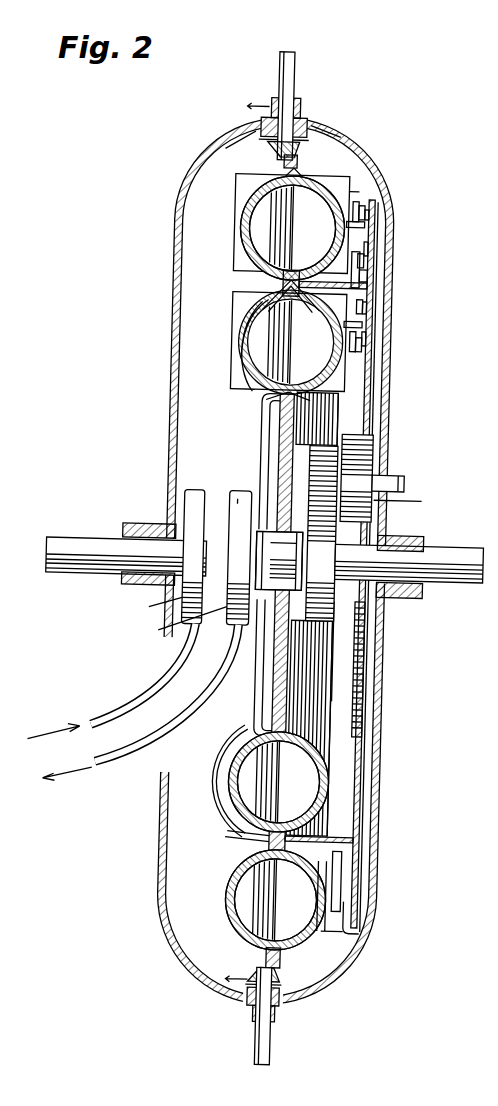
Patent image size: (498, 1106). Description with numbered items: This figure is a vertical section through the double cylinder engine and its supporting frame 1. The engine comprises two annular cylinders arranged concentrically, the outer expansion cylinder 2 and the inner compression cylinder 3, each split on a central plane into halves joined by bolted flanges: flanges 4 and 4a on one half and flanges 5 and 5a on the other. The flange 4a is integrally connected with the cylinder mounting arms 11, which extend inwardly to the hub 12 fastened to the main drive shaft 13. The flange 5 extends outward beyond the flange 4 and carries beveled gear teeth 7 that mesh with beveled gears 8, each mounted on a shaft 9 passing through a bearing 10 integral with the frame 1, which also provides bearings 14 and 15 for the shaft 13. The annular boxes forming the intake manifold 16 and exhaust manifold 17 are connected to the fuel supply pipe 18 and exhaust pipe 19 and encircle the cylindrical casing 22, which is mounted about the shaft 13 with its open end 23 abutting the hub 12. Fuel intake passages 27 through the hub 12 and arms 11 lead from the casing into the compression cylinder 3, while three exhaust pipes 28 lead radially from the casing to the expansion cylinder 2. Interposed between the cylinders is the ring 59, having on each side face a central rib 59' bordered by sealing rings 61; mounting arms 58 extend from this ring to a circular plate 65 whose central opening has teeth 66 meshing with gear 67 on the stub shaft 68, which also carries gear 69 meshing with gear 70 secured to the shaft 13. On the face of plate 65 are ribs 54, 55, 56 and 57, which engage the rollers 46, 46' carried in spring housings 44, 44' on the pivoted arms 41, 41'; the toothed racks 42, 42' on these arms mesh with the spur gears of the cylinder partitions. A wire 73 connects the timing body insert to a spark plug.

The supporting frame 1 is at (385, 145).
The expansion cylinder 2 is at (348, 190).
The compression cylinder 3 is at (342, 380).
The flange 4 is at (274, 166).
The flange 4a is at (236, 736).
The flange 5 is at (292, 160).
The flange 5a is at (336, 414).
The beveled gear teeth 7 is at (305, 140).
The beveled gear 8 is at (255, 135).
The shaft 9 is at (267, 82).
The bearing 10 is at (290, 112).
The engine cylinder mounting arm 11 is at (336, 432).
The hub 12 is at (338, 650).
The main drive shaft 13 is at (450, 555).
The bearing 14 is at (420, 534).
The bearing 15 is at (130, 530).
The intake manifold 16 is at (190, 492).
The exhaust manifold 17 is at (240, 492).
The fuel supply pipe 18 is at (124, 716).
The exhaust pipe 19 is at (135, 762).
The cylindrical casing 22 is at (150, 610).
The open end 23 is at (160, 633).
The fuel intake passage 27 is at (236, 500).
The exhaust pipe 28 is at (258, 425).
The arm 41 is at (396, 217).
The arm 41' is at (397, 324).
The toothed rack 42 is at (392, 193).
The toothed rack 42' is at (411, 354).
The tubular housing 44 is at (419, 225).
The tubular housing 44' is at (421, 321).
The roller 46 is at (403, 226).
The roller 46' is at (402, 320).
The rib 54 is at (372, 200).
The rib 55 is at (352, 268).
The rib 56 is at (360, 276).
The rib 57 is at (366, 360).
The mounting arm 58 is at (360, 284).
The ring 59 is at (301, 249).
The central rib 59' is at (262, 297).
The sealing ring 61 is at (276, 846).
The circular plate 65 is at (370, 398).
The teeth 66 is at (368, 668).
The gear 67 is at (372, 452).
The stub shaft 68 is at (402, 481).
The gear 69 is at (290, 452).
The gear 70 is at (338, 605).
The wire 73 is at (420, 498).